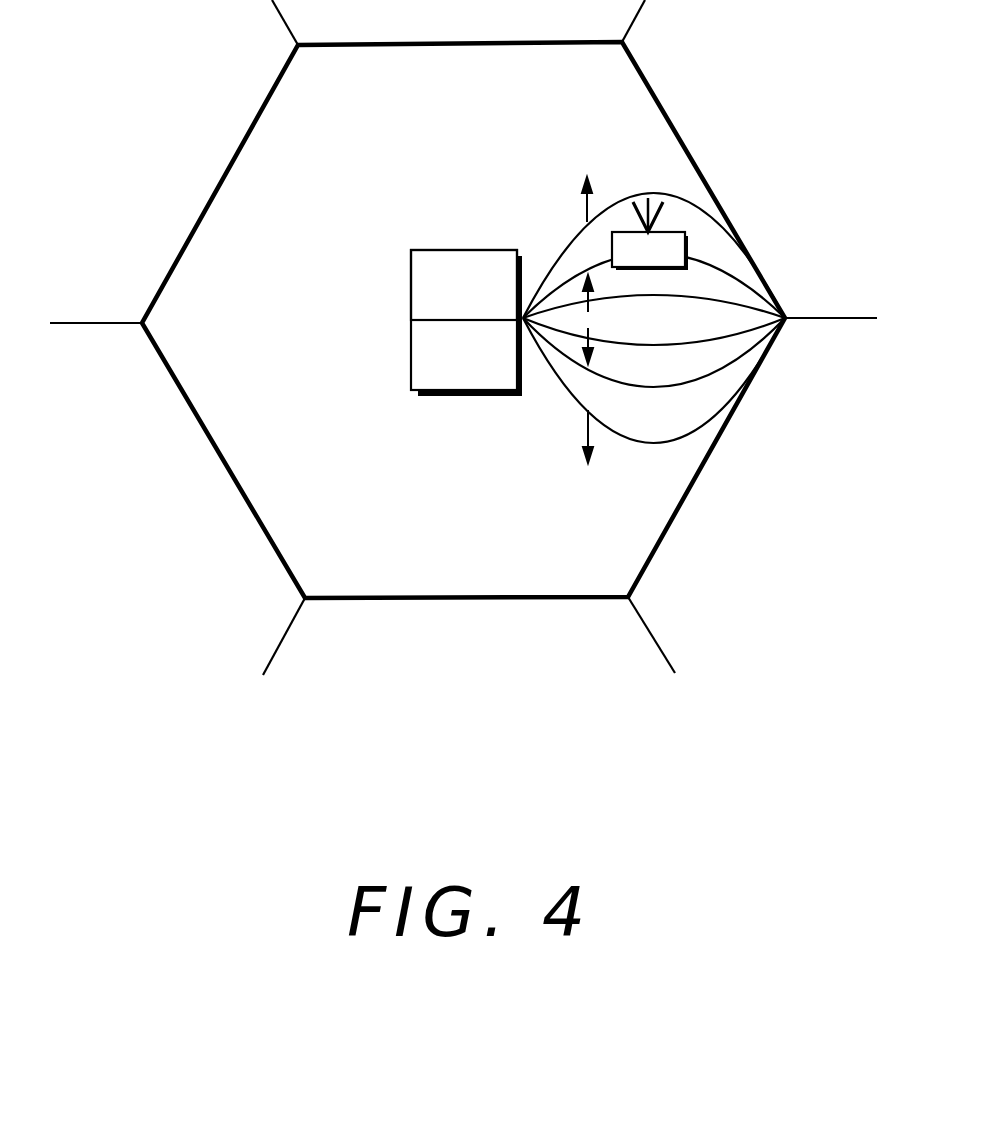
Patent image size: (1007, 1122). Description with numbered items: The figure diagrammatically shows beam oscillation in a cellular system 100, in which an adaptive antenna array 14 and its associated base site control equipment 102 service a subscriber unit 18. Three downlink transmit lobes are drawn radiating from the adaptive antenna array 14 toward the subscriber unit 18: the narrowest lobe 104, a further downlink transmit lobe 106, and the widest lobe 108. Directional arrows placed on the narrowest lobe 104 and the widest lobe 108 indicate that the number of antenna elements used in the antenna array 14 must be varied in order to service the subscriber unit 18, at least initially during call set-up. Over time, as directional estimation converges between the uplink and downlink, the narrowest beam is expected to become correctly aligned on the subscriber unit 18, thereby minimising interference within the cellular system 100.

The cellular system 100 is at (484, 735).
The adaptive antenna array 14 is at (411, 288).
The base site control equipment 102 is at (411, 361).
The subscriber unit 18 is at (684, 268).
The narrowest lobe 104 is at (623, 296).
The downlink transmit lobe 106 is at (700, 384).
The widest lobe 108 is at (553, 412).